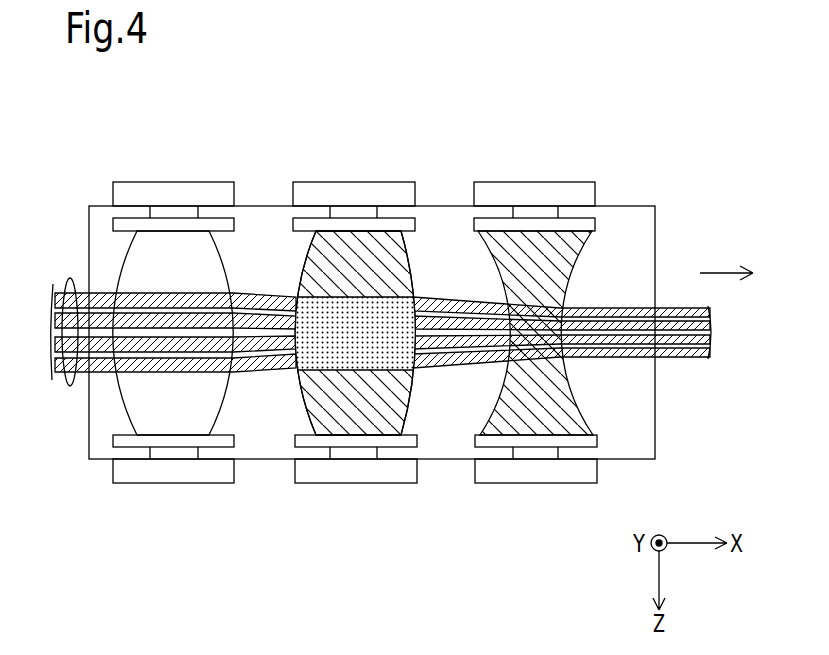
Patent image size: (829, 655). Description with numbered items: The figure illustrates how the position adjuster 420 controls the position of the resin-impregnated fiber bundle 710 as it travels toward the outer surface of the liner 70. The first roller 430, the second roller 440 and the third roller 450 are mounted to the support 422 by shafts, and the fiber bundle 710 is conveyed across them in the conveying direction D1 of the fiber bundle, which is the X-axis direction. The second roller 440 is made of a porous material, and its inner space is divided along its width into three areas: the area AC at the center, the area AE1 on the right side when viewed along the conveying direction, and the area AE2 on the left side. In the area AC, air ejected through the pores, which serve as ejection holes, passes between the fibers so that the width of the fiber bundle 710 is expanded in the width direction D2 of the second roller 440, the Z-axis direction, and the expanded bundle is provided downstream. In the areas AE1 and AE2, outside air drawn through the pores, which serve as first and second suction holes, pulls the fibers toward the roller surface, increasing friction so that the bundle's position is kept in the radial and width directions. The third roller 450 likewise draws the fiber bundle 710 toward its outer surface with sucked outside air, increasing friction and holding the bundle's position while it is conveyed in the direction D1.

The position adjuster 420 is at (352, 278).
The support 422 is at (613, 205).
The first roller 430 is at (146, 242).
The second roller 440 is at (333, 240).
The third roller 450 is at (512, 240).
The liner 70 is at (727, 257).
The resin-impregnated fiber bundle 710 is at (70, 388).
The conveying direction of the fiber bundle D1 is at (376, 279).
The width direction of the second roller D2 is at (353, 295).
The area AE1 is at (313, 405).
The area AE2 is at (403, 248).
The area AC is at (390, 368).